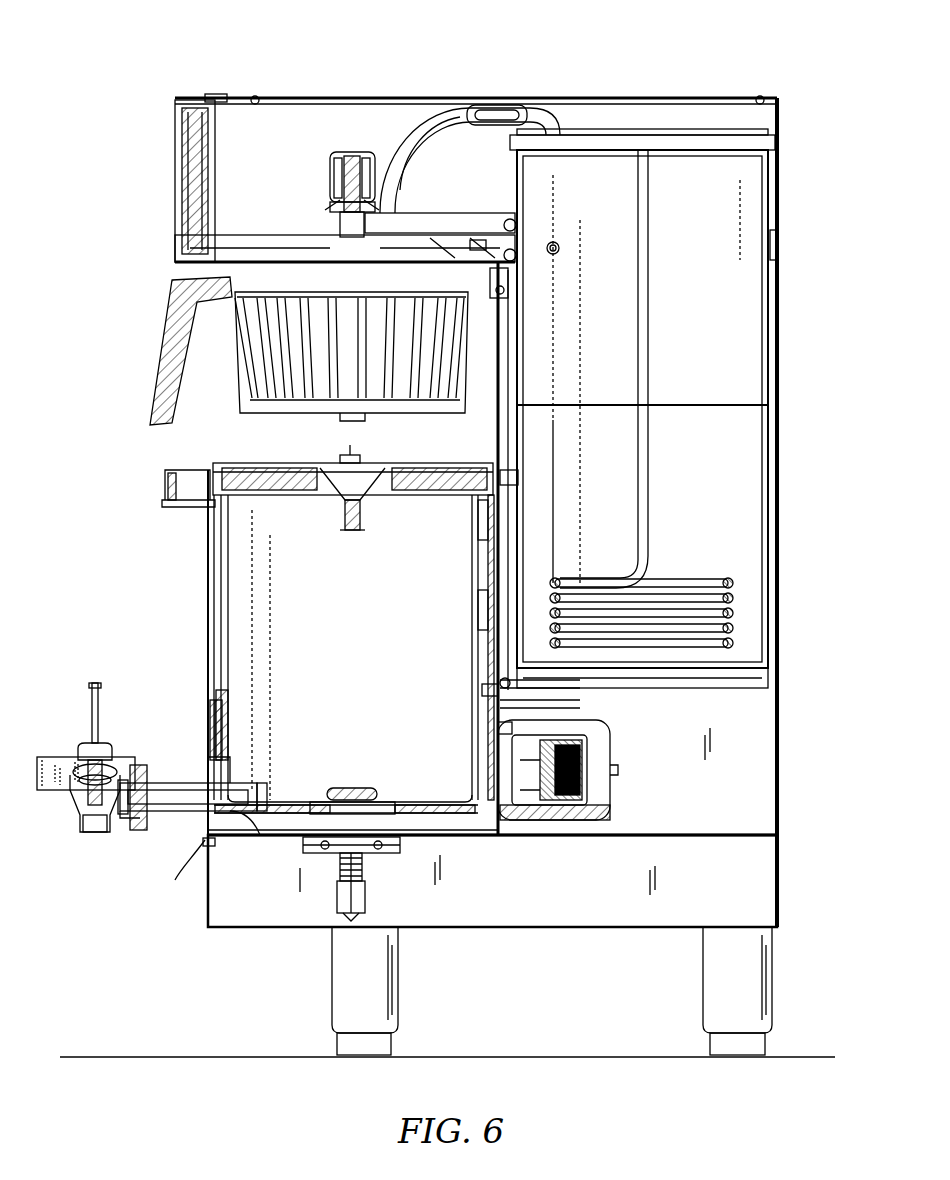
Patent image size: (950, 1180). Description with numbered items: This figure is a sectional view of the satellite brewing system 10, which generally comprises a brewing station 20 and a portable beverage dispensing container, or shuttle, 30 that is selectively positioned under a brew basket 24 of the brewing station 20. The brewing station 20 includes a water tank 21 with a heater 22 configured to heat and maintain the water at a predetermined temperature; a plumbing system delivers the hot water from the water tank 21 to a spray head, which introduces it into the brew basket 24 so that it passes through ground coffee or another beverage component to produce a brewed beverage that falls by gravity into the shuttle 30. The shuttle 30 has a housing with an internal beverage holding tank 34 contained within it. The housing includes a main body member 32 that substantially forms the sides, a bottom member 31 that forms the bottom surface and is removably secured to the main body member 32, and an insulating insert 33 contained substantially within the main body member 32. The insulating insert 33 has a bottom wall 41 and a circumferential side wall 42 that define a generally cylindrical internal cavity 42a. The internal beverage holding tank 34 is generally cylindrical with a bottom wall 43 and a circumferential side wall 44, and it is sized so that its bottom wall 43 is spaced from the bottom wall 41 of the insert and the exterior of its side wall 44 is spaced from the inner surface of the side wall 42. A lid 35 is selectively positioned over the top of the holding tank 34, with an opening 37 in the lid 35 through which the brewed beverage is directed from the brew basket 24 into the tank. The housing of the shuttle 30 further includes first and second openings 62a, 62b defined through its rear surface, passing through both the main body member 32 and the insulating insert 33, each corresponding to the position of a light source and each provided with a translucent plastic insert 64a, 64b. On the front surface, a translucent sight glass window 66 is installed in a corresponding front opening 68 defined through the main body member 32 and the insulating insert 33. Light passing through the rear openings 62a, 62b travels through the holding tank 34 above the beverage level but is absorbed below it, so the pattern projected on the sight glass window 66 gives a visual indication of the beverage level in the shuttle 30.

The satellite brewing system 10 is at (100, 48).
The brewing station 20 is at (777, 205).
The water tank 21 is at (777, 600).
The heater 22 is at (735, 585).
The brew basket 24 is at (178, 345).
The portable beverage dispensing container 30 is at (210, 530).
The bottom member 31 is at (205, 840).
The main body member 32 is at (210, 672).
The insulating insert 33 is at (220, 705).
The internal beverage holding tank 34 is at (225, 668).
The lid 35 is at (300, 468).
The opening 37 is at (342, 505).
The bottom wall 41 is at (300, 810).
The circumferential side wall 42 is at (490, 700).
The internal cavity 42a is at (490, 725).
The bottom wall 43 is at (345, 855).
The circumferential side wall 44 is at (487, 690).
The first opening 62a is at (505, 480).
The second opening 62b is at (510, 683).
The insert 64a is at (477, 560).
The insert 64b is at (478, 620).
The sight glass window 66 is at (205, 620).
The front opening 68 is at (205, 580).